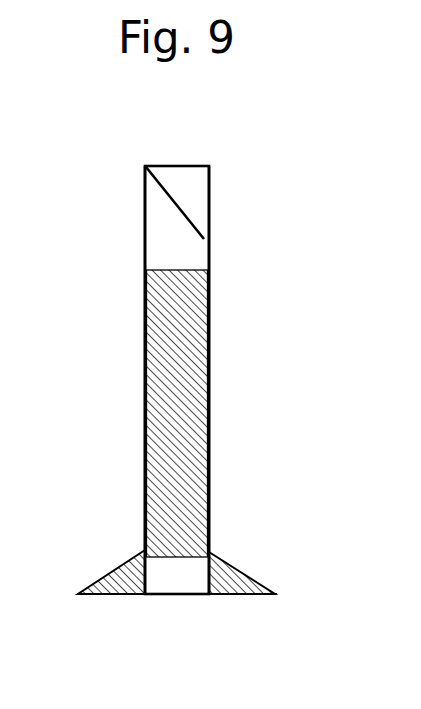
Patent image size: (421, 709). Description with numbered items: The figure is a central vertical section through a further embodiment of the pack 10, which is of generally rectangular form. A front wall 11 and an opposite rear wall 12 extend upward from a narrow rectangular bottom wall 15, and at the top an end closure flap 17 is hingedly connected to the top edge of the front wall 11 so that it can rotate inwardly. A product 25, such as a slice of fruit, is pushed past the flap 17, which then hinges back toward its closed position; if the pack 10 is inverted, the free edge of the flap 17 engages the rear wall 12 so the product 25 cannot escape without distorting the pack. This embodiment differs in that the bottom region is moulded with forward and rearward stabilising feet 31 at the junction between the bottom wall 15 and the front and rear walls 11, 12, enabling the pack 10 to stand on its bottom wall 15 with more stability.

The pack 10 is at (121, 167).
The front wall 11 is at (145, 243).
The rear wall 12 is at (209, 247).
The end closure flap 17 is at (167, 195).
The product 25 is at (175, 402).
The stabilising feet 31 is at (132, 568).
The bottom wall 15 is at (165, 595).